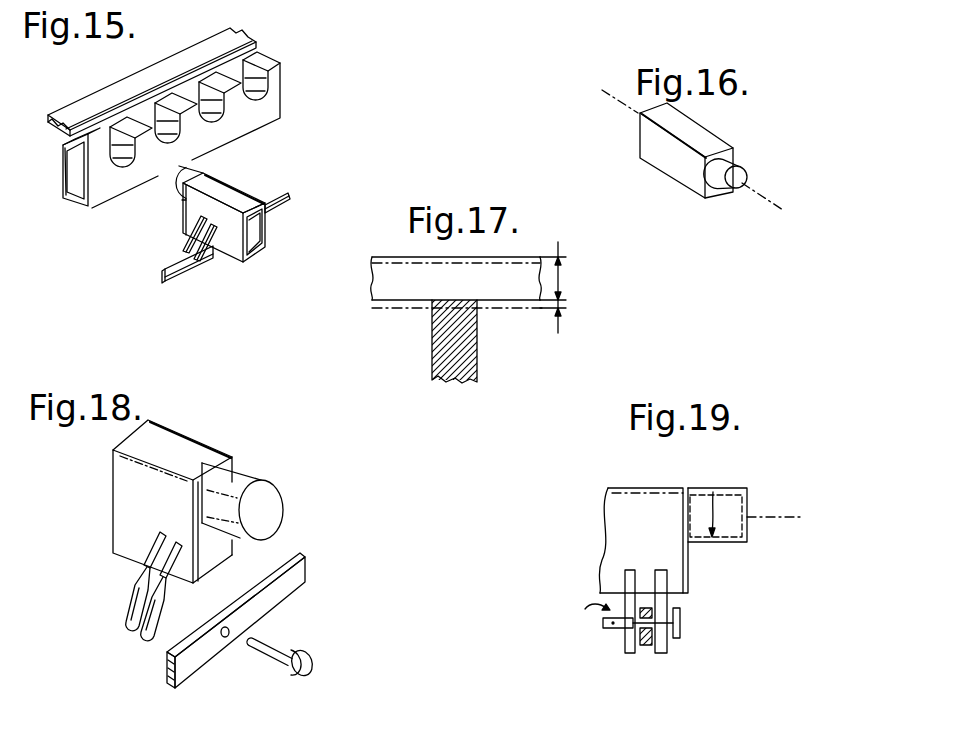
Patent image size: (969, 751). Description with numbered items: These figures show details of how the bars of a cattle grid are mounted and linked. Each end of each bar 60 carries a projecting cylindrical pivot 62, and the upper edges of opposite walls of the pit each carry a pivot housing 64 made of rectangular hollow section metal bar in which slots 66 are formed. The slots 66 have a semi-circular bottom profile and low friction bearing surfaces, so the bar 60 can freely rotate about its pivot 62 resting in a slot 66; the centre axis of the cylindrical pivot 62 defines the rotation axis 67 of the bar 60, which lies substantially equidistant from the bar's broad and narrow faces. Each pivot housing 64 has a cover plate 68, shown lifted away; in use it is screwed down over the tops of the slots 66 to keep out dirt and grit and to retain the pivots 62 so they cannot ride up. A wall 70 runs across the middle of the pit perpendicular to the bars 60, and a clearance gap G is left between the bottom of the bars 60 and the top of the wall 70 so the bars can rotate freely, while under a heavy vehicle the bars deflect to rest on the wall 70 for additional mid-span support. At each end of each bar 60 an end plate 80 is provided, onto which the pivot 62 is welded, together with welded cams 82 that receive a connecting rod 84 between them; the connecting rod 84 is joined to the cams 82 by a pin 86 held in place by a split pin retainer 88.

In FIG. 15, the bar 60 is at (223, 187).
In FIG. 16, the bar 60 is at (690, 183).
In FIG. 17, the bar 60 is at (387, 256).
In FIG. 18, the bar 60 is at (168, 435).
In FIG. 19, the bar 60 is at (667, 487).
In FIG. 15, the cylindrical pivot 62 is at (167, 200).
In FIG. 16, the cylindrical pivot 62 is at (740, 163).
In FIG. 18, the cylindrical pivot 62 is at (247, 468).
In FIG. 19, the cylindrical pivot 62 is at (740, 488).
In FIG. 15, the pivot housing 64 is at (80, 206).
In FIG. 15, the slot 66 is at (123, 167).
In FIG. 16, the rotation axis 67 is at (757, 196).
In FIG. 19, the rotation axis 67 is at (770, 523).
In FIG. 15, the cover plate 68 is at (110, 92).
In FIG. 17, the wall 70 is at (477, 353).
In FIG. 18, the end plate 80 is at (208, 557).
In FIG. 19, the end plate 80 is at (688, 563).
In FIG. 18, the cam 82 is at (136, 608).
In FIG. 19, the cam 82 is at (625, 649).
In FIG. 18, the connecting rod 84 is at (280, 597).
In FIG. 19, the connecting rod 84 is at (643, 648).
In FIG. 18, the pin 86 is at (303, 678).
In FIG. 19, the pin 86 is at (681, 616).
In FIG. 19, the split pin retainer 88 is at (582, 623).
In FIG. 17, the clearance gap G is at (560, 304).